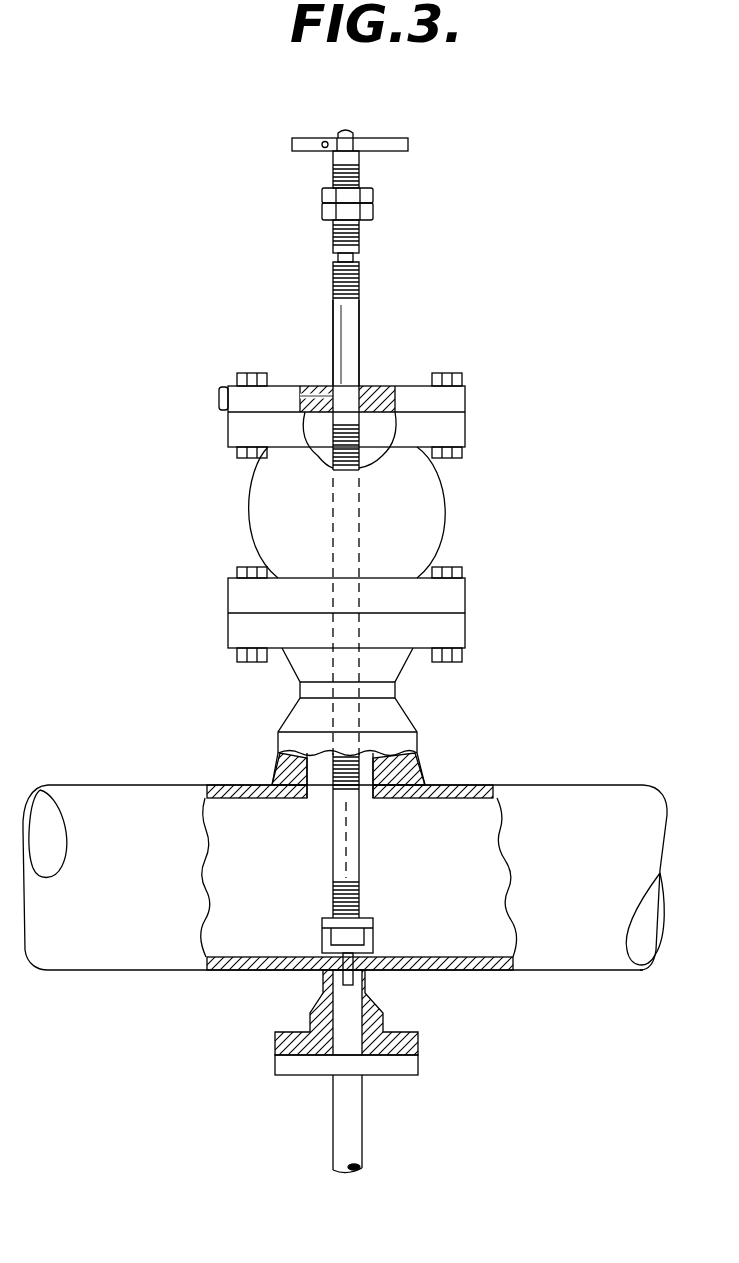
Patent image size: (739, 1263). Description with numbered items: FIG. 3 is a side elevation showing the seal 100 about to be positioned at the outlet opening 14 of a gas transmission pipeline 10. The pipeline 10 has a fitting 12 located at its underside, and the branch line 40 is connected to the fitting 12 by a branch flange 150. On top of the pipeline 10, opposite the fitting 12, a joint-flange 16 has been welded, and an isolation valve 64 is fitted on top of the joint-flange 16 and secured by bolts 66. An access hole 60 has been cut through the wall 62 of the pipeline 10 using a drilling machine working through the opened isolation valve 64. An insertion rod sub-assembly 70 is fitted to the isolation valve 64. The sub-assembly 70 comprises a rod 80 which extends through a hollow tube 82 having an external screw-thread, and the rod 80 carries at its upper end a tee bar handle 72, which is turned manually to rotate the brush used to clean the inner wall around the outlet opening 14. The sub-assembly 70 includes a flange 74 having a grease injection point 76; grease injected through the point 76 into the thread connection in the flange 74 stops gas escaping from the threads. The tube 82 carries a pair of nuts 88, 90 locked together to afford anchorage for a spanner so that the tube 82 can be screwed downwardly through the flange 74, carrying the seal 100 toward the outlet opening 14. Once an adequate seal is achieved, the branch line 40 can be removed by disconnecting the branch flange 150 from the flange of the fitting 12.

The gas transmission pipeline 10 is at (597, 894).
The fitting 12 is at (410, 1042).
The outlet opening 14 is at (318, 970).
The joint-flange 16 is at (425, 686).
The branch line 40 is at (343, 1097).
The access hole 60 is at (413, 765).
The wall 62 is at (230, 790).
The isolation valve 64 is at (430, 493).
The bolts 66 is at (448, 563).
The insertion rod sub-assembly 70 is at (390, 341).
The tee bar handle 72 is at (295, 142).
The flange 74 is at (447, 398).
The grease injection point 76 is at (220, 402).
The rod 80 is at (357, 157).
The hollow tube 82 is at (335, 280).
The nut 88 is at (325, 213).
The nut 90 is at (323, 195).
The seal 100 is at (328, 917).
The branch flange 150 is at (398, 1068).